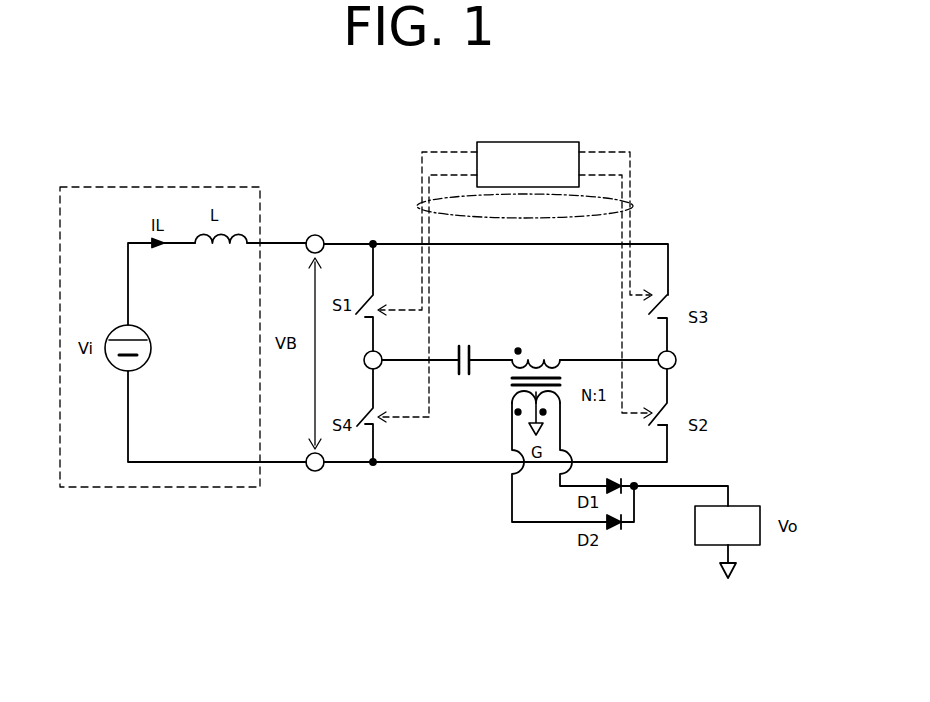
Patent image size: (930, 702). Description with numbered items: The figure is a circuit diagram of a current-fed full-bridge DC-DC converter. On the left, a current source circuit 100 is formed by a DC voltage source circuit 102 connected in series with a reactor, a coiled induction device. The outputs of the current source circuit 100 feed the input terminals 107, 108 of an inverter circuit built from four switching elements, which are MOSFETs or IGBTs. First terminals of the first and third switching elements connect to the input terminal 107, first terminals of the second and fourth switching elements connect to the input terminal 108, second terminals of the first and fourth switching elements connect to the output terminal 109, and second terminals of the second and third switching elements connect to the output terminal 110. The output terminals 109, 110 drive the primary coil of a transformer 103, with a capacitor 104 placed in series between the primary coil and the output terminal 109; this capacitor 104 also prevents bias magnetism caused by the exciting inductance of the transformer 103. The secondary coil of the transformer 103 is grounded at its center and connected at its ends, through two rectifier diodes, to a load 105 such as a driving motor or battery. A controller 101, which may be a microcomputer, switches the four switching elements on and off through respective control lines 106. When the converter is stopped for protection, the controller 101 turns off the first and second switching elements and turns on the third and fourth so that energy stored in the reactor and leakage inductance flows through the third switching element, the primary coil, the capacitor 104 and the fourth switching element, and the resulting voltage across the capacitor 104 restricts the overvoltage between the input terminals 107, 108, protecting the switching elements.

The current source circuit 100 is at (138, 187).
The controller 101 is at (527, 142).
The DC voltage source circuit 102 is at (151, 342).
The transformer 103 is at (536, 352).
The capacitor 104 is at (463, 376).
The load 105 is at (752, 506).
The control lines 106 is at (412, 204).
The input terminal 107 is at (315, 235).
The input terminal 108 is at (315, 471).
The output terminal 109 is at (364, 360).
The output terminal 110 is at (676, 360).